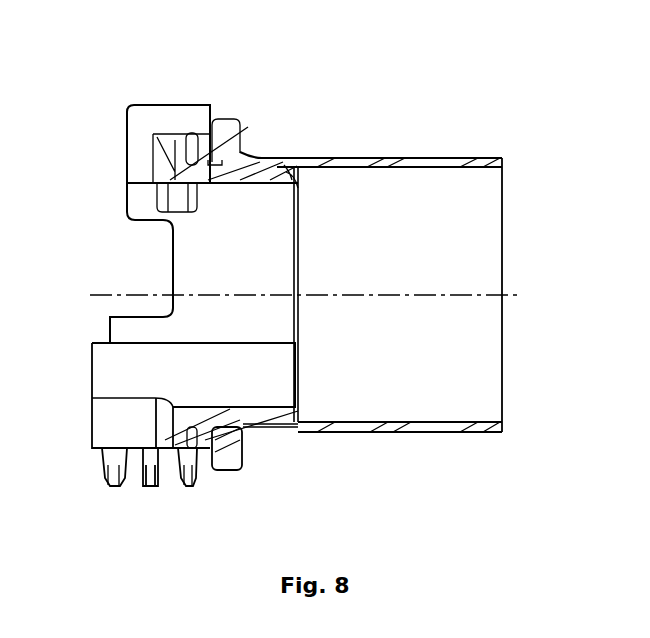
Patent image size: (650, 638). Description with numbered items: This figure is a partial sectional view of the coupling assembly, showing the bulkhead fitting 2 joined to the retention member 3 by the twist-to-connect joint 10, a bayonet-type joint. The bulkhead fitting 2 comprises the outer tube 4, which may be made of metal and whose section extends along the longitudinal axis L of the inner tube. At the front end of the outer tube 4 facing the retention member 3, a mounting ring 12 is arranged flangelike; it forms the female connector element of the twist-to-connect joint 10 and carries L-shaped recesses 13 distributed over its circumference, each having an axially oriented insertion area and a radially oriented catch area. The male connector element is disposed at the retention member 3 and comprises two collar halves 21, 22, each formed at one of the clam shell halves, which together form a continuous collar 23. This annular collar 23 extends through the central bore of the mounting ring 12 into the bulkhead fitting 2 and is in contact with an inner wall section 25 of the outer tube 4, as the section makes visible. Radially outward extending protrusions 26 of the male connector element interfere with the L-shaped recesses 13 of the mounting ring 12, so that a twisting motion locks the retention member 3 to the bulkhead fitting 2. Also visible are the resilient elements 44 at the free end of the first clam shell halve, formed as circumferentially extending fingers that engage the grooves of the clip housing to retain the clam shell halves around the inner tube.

The bulkhead fitting 2 is at (445, 438).
The retention member 3 is at (138, 104).
The outer tube 4 is at (462, 157).
The twist-to-connect joint 10 is at (276, 146).
The mounting ring 12 is at (232, 116).
The L-shaped recesses 13 is at (226, 470).
The collar half 21 is at (302, 186).
The collar half 22 is at (300, 416).
The collar 23 is at (290, 272).
The inner wall section 25 is at (320, 157).
The protrusions 26 is at (248, 128).
The resilient elements 44 is at (113, 492).
The longitudinal axis L is at (532, 292).